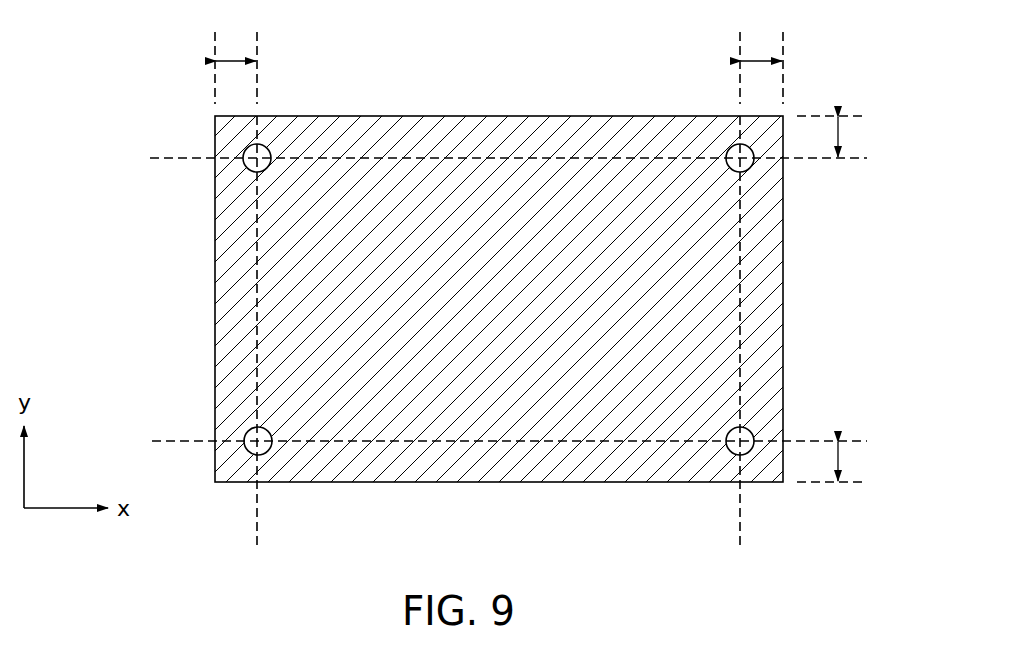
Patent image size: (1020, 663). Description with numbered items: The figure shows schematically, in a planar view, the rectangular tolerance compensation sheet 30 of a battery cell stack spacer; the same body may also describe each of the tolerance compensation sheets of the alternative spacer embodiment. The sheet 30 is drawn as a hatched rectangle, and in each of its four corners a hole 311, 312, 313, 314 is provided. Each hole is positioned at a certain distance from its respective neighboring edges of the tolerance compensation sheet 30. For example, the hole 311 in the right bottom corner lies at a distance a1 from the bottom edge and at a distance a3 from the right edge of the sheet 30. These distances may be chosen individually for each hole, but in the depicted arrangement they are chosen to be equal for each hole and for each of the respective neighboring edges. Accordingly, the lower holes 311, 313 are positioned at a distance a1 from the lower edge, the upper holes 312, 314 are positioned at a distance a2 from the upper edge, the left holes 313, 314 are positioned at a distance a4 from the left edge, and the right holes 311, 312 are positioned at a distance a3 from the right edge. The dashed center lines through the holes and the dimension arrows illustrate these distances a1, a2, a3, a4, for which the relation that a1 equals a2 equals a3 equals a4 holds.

The tolerance compensation sheet 30 is at (175, 58).
The hole 311 is at (749, 429).
The hole 312 is at (732, 150).
The hole 313 is at (246, 452).
The hole 314 is at (247, 166).
The distance a1 is at (846, 462).
The distance a2 is at (846, 138).
The distance a3 is at (761, 57).
The distance a4 is at (237, 57).